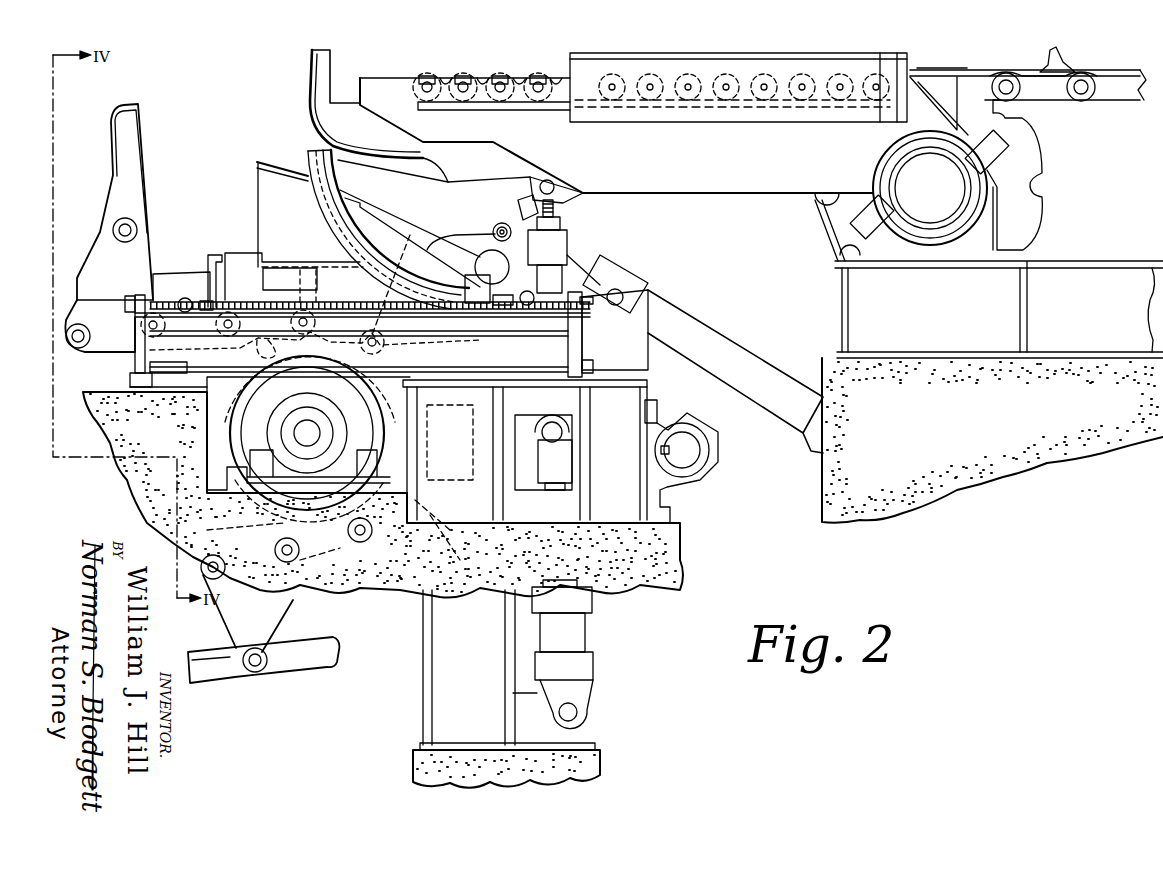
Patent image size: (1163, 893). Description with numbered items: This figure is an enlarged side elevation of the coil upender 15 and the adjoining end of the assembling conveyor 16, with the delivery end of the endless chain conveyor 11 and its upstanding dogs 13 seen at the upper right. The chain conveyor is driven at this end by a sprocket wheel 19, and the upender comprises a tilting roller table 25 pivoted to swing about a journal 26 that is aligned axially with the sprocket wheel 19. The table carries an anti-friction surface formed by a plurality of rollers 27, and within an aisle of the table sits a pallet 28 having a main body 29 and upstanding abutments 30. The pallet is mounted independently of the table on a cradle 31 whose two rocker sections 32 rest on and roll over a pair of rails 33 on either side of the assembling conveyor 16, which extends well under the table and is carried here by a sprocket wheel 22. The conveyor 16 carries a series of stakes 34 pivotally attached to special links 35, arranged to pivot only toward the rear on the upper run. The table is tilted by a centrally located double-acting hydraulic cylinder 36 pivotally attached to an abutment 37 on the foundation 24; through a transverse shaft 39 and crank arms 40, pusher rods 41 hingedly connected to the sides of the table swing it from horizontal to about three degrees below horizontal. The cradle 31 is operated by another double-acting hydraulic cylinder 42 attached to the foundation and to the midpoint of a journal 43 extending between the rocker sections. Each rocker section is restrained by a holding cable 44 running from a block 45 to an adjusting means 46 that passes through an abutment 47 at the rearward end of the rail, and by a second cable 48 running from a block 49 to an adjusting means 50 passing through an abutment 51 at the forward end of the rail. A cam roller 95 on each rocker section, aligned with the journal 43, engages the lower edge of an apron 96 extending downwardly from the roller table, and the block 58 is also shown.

The endless chain conveyor 11 is at (1105, 80).
The upstanding dogs 13 is at (1053, 58).
The coil upender 15 is at (393, 82).
The assembling conveyor 16 is at (179, 285).
The sprocket wheel 19 is at (1030, 152).
The sprocket wheel 22 is at (213, 458).
The foundation 24 is at (675, 557).
The tilting roller table 25 is at (705, 180).
The journal 26 is at (960, 197).
The rollers 27 is at (538, 73).
The pallet 28 is at (308, 88).
The main body 29 is at (373, 130).
The upstanding abutments 30 is at (325, 72).
The cradle 31 is at (350, 190).
The rocker sections 32 is at (560, 233).
The rails 33 is at (642, 315).
The stakes 34 is at (132, 133).
The special links 35 is at (140, 258).
The double-acting hydraulic cylinder 36 is at (577, 632).
The abutment 37 is at (580, 738).
The transverse shaft 39 is at (690, 455).
The crank arms 40 is at (655, 425).
The pusher rods 41 is at (567, 244).
The double-acting hydraulic cylinder 42 is at (770, 380).
The journal 43 is at (495, 230).
The holding cable 44 is at (398, 262).
The block 45 is at (305, 157).
The adjusting means 46 is at (567, 268).
The abutment 47 is at (578, 348).
The cable 48 is at (245, 303).
The block 49 is at (470, 292).
The adjusting means 50 is at (188, 297).
The abutment 51 is at (147, 323).
The shoe 58 is at (267, 185).
The cam roller 95 is at (502, 222).
The apron 96 is at (470, 148).